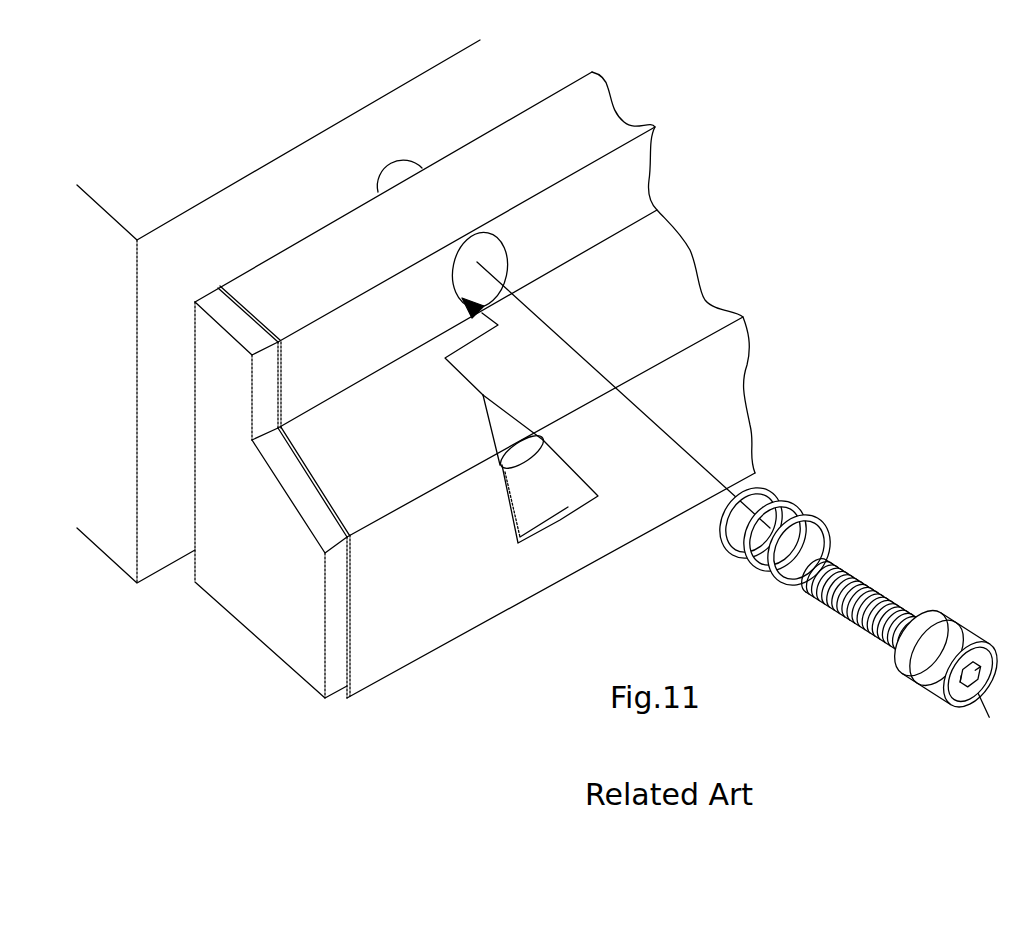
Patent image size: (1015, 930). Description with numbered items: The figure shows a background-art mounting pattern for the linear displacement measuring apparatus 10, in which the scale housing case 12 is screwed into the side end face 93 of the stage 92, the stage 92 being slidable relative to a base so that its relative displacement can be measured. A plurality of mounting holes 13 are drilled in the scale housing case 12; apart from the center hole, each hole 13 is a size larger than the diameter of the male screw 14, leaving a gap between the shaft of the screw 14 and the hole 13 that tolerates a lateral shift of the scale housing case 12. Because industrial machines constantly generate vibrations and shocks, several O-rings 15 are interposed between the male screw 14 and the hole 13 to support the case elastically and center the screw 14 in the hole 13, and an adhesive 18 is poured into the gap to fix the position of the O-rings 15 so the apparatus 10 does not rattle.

The linear displacement measuring apparatus 10 is at (728, 164).
The scale housing case 12 is at (625, 128).
The mounting hole 13 is at (498, 264).
The male screw 14 is at (905, 598).
The O-ring 15 is at (807, 510).
The adhesive 18 is at (520, 503).
The stage 92 is at (105, 530).
The side end face 93 is at (242, 205).